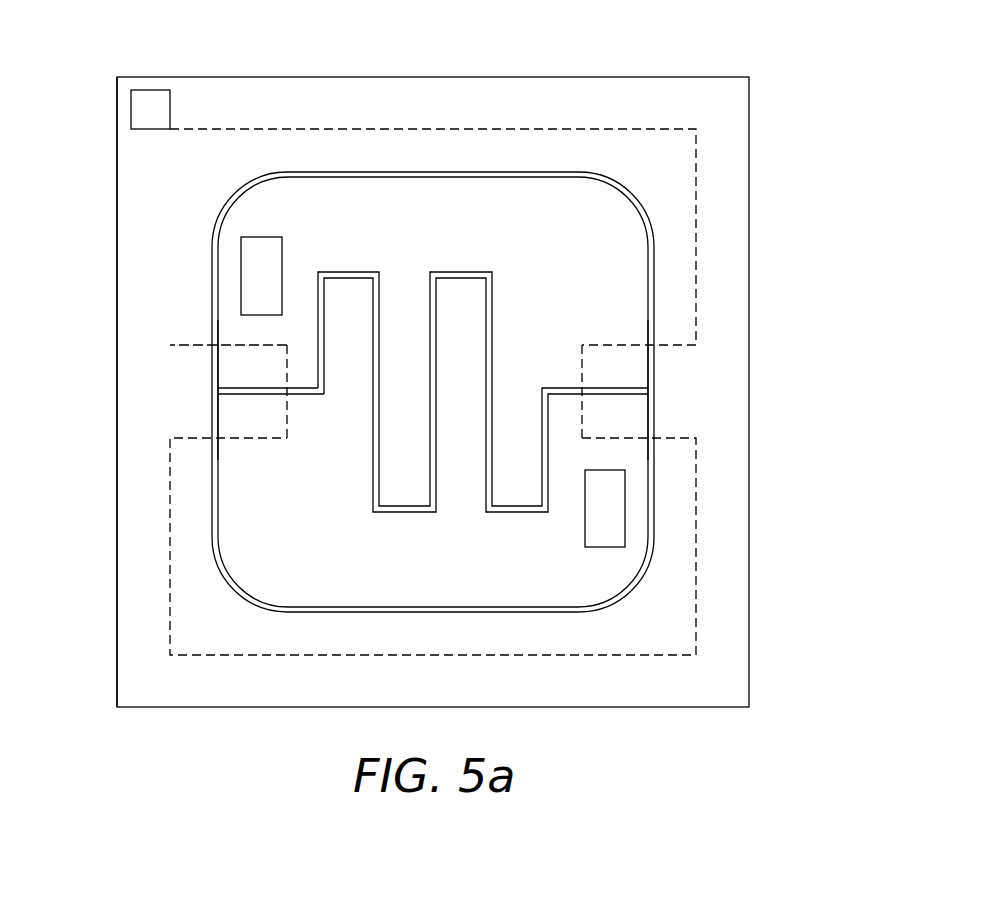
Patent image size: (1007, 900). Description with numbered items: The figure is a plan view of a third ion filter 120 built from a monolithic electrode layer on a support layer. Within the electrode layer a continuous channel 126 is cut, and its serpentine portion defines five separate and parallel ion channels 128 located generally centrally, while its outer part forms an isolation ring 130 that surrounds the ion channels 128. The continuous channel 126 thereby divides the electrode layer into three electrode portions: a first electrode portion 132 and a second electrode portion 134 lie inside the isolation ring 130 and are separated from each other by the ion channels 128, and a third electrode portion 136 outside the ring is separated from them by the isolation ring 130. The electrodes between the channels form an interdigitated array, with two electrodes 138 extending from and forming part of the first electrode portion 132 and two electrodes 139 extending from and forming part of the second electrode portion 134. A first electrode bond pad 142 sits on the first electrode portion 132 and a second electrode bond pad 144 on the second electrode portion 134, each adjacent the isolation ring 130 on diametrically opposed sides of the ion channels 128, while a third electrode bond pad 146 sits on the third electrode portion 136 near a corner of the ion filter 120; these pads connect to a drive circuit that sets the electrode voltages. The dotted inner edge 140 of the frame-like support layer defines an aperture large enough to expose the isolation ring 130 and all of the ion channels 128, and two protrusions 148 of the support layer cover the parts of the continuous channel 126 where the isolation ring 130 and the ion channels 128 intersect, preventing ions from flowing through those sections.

The ion filter 120 is at (728, 59).
The continuous channel 126 is at (563, 390).
The ion channels 128 is at (490, 297).
The isolation ring 130 is at (573, 610).
The first electrode portion 132 is at (250, 505).
The second electrode portion 134 is at (617, 275).
The third electrode portion 136 is at (140, 180).
The electrodes 138 is at (448, 285).
The electrodes 139 is at (505, 497).
The inner edge 140 is at (280, 128).
The first electrode bond pad 142 is at (617, 510).
The second electrode bond pad 144 is at (251, 276).
The third electrode bond pad 146 is at (135, 110).
The protrusions 148 is at (196, 396).